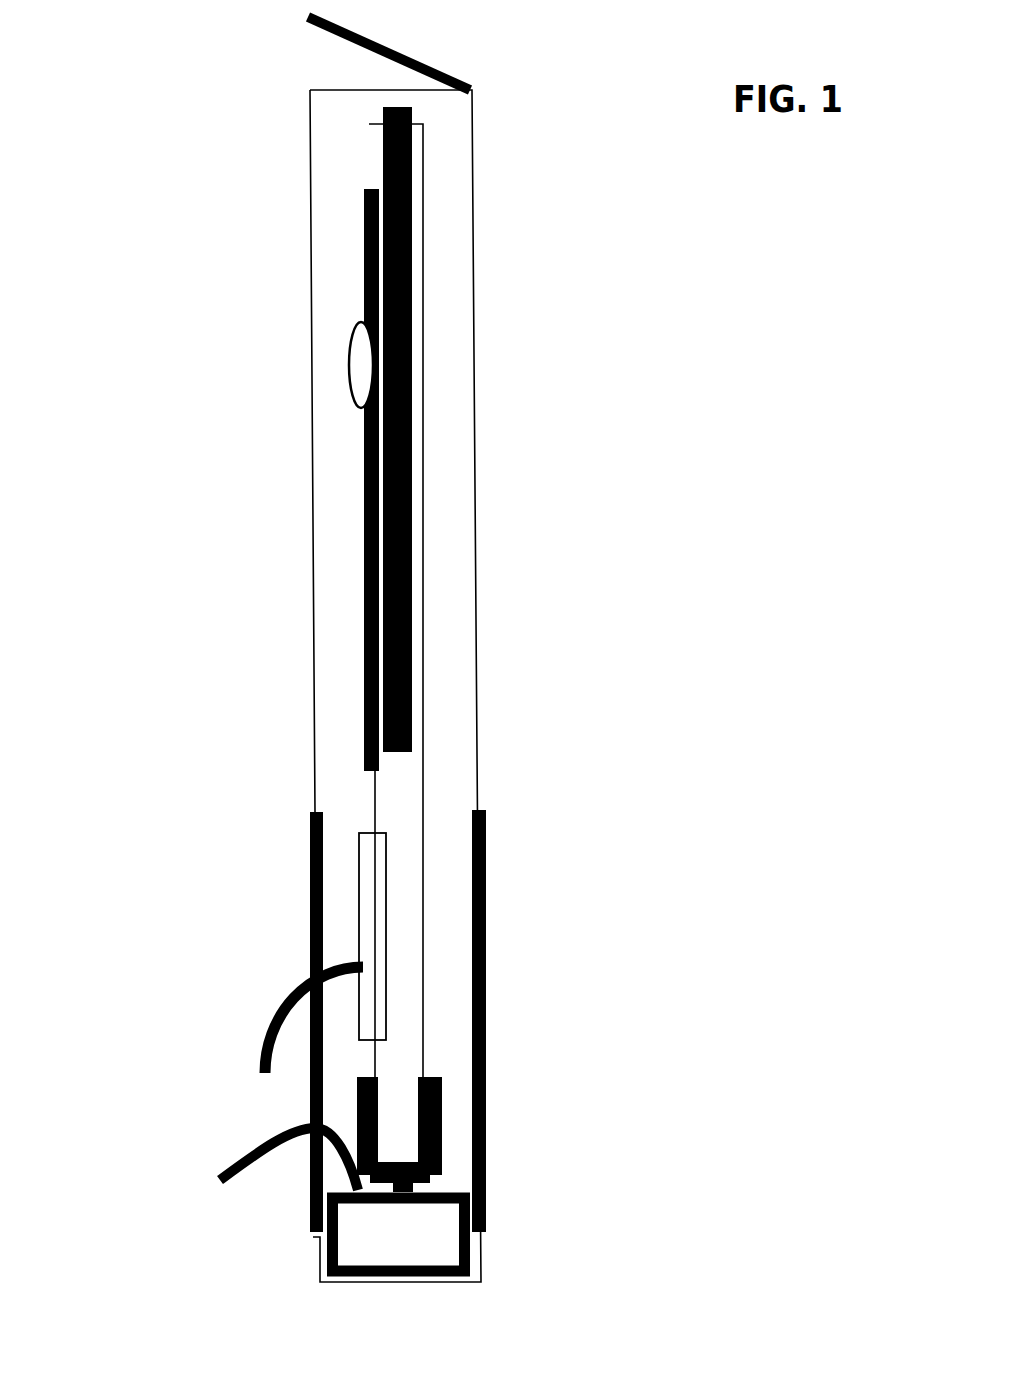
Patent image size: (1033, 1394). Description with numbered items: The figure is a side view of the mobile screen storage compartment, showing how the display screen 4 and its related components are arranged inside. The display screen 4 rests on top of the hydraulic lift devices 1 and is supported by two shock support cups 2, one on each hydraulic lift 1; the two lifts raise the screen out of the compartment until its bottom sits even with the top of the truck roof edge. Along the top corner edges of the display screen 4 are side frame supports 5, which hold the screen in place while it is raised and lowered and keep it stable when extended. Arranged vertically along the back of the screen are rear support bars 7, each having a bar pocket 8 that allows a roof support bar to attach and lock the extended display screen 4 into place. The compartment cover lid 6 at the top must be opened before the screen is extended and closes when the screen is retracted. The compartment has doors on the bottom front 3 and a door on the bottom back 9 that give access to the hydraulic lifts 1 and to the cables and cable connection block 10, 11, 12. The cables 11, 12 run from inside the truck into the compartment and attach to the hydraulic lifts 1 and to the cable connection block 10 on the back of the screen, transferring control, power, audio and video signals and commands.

The hydraulic lift device 1 is at (446, 1234).
The shock support cup 2 is at (453, 1113).
The bottom front door 3 is at (501, 905).
The display screen 4 is at (436, 751).
The side frame support 5 is at (420, 187).
The compartment cover lid 6 is at (415, 53).
The rear support bar 7 is at (350, 226).
The bar pocket 8 is at (335, 372).
The bottom back door 9 is at (297, 835).
The cable connection block 10 is at (345, 908).
The cable 11 is at (269, 1018).
The cable 12 is at (253, 1139).